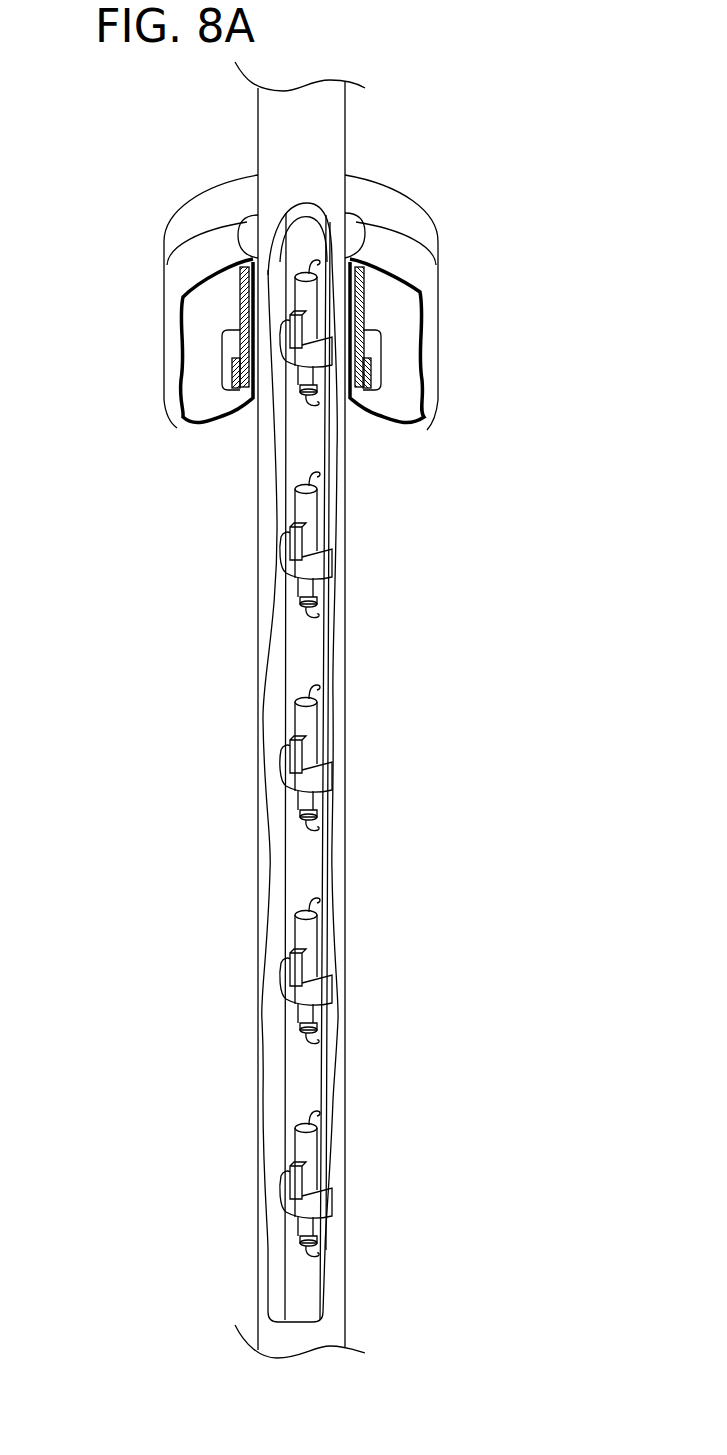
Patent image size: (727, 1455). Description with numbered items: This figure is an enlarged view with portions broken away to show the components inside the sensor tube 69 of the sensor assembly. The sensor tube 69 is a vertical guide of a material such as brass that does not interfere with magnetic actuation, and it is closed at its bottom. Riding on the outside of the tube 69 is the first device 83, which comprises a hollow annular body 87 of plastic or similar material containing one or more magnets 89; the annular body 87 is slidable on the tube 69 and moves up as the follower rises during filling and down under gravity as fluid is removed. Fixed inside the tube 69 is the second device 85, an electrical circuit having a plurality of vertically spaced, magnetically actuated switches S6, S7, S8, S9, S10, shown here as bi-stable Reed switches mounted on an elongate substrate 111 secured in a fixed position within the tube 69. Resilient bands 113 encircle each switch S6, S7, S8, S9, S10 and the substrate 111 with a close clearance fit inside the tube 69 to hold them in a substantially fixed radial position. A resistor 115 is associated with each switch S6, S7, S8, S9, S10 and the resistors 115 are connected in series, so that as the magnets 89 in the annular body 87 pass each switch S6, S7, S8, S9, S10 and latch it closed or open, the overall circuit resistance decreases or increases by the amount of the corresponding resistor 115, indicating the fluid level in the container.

The sensor tube 69 is at (337, 122).
The first device 83 is at (320, 302).
The second device 85 is at (267, 503).
The annular body 87 is at (430, 252).
The magnet 89 is at (365, 373).
The elongate substrate 111 is at (308, 655).
The resilient band 113 is at (287, 778).
The resistor 115 is at (285, 972).
The switch S6 is at (308, 1153).
The switch S7 is at (292, 971).
The switch S8 is at (284, 758).
The switch S9 is at (310, 522).
The switch S10 is at (317, 383).